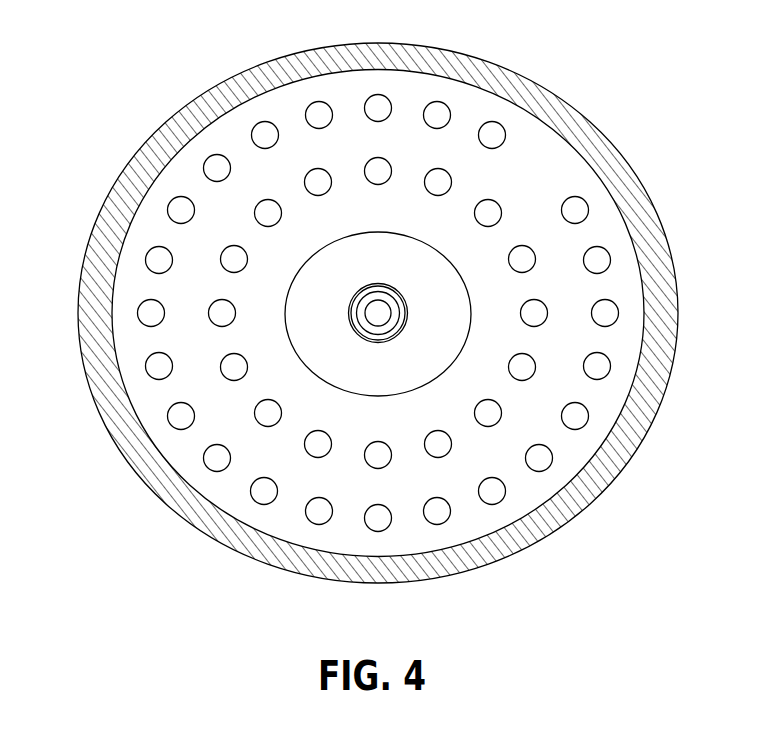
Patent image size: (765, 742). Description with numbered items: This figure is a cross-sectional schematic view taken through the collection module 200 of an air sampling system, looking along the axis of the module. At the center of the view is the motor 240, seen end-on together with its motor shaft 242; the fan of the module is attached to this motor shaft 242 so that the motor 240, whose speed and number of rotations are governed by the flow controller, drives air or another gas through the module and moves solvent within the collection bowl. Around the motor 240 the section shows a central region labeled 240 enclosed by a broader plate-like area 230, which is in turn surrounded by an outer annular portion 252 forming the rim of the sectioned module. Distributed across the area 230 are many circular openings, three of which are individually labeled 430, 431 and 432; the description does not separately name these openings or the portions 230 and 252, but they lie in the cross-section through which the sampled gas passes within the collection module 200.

The collection module 200 is at (362, 295).
The outer rim ring 252 is at (258, 73).
The faceplate 230 is at (400, 313).
The motor 240 is at (363, 240).
The motor shaft 242 is at (383, 313).
The gas hole 430 is at (127, 195).
The gas hole 431 is at (233, 367).
The gas hole 432 is at (539, 458).